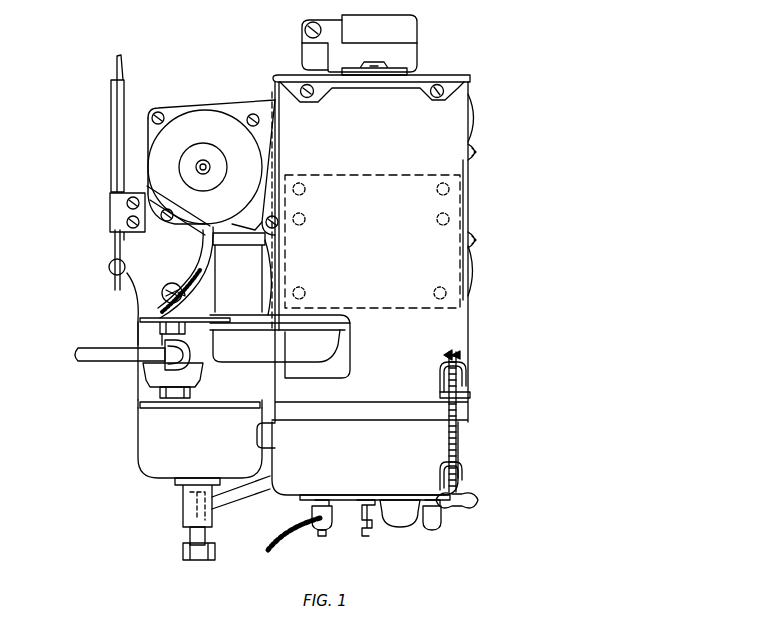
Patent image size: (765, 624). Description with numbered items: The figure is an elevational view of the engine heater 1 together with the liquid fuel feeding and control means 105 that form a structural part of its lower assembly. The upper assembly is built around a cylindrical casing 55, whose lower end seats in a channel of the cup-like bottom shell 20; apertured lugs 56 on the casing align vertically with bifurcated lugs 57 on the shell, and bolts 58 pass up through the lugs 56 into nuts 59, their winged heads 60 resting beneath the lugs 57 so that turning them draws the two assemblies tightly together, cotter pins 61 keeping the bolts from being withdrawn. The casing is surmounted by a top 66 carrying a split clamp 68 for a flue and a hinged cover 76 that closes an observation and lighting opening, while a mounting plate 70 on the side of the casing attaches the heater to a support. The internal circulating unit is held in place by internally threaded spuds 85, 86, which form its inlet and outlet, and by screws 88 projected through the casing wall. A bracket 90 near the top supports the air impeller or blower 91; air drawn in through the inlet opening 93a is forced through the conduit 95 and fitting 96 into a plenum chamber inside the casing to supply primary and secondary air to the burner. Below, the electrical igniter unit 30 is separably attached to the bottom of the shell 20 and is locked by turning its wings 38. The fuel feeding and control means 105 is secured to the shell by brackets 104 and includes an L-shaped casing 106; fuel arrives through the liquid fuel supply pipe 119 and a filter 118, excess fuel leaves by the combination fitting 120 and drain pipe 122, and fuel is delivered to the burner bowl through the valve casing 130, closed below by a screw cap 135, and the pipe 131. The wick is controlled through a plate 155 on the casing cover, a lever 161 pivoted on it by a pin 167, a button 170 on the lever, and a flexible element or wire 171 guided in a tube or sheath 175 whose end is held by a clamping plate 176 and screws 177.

The engine heater 1 is at (472, 315).
The cup-like shell 20 is at (365, 461).
The electrical igniter unit 30 is at (352, 502).
The wing 38 is at (402, 515).
The cylindrical casing 55 is at (370, 252).
The apertured lugs 56 is at (468, 396).
The bifurcated lugs 57 is at (464, 483).
The bolts 58 is at (458, 437).
The nuts 59 is at (462, 382).
The winged heads 60 is at (478, 502).
The cotter pins 61 is at (458, 352).
The top 66 is at (444, 78).
The split clamp 68 is at (405, 42).
The mounting plate 70 is at (462, 203).
The cover 76 is at (352, 68).
The internally threaded spud 85 is at (471, 270).
The internally threaded spud 86 is at (476, 125).
The screws 88 is at (480, 155).
The bracket 90 is at (262, 102).
The air impeller or blower 91 is at (139, 173).
The inlet opening 93a is at (208, 146).
The conduit 95 is at (242, 274).
The fitting 96 is at (280, 346).
The brackets 104 is at (280, 438).
The liquid fuel feeding and control means 105 is at (126, 397).
The casing 106 is at (150, 426).
The filter 118 is at (205, 362).
The liquid fuel supply pipe 119 is at (120, 346).
The combination fitting 120 is at (208, 522).
The drain pipe 122 is at (206, 536).
The valve casing 130 is at (182, 505).
The pipe 131 is at (262, 487).
The screw cap 135 is at (182, 551).
The plate 155 is at (179, 272).
The lever 161 is at (130, 280).
The pin 167 is at (175, 283).
The button 170 is at (108, 266).
The flexible element or wire 171 is at (126, 62).
The tube or sheath 175 is at (110, 104).
The clamping plate 176 is at (112, 198).
The screws 177 is at (138, 203).